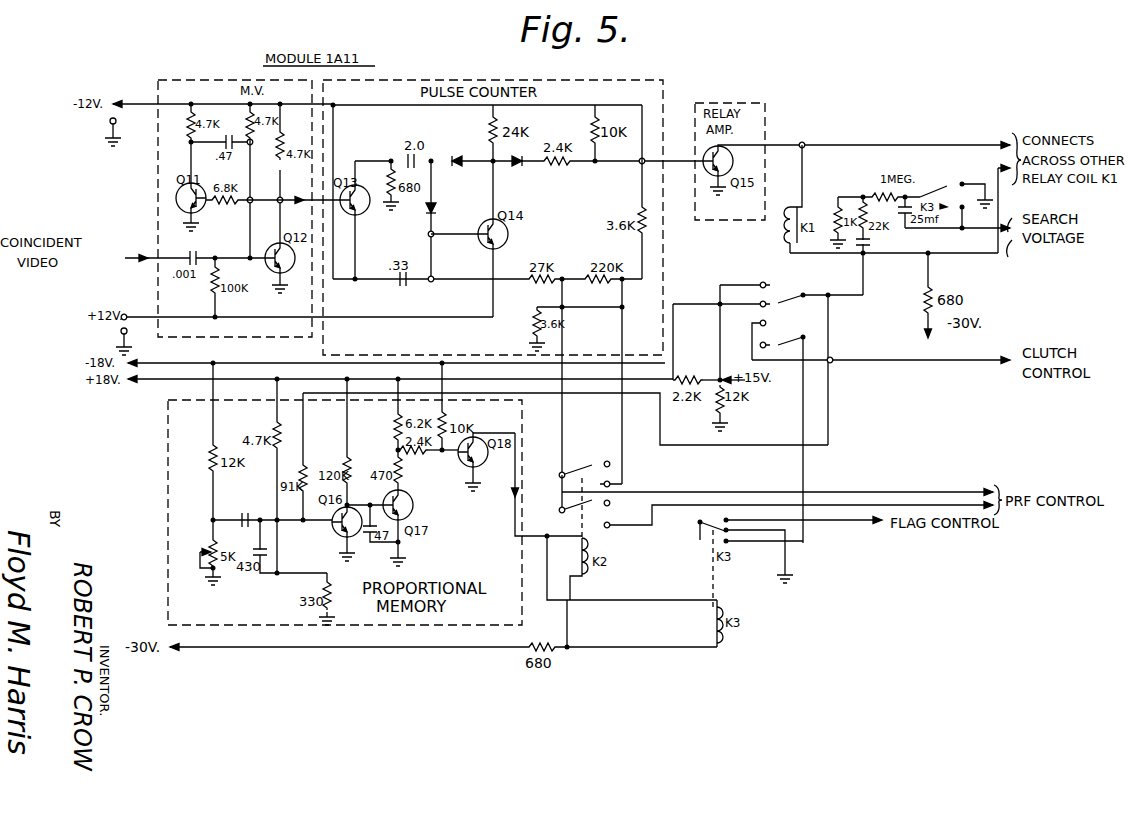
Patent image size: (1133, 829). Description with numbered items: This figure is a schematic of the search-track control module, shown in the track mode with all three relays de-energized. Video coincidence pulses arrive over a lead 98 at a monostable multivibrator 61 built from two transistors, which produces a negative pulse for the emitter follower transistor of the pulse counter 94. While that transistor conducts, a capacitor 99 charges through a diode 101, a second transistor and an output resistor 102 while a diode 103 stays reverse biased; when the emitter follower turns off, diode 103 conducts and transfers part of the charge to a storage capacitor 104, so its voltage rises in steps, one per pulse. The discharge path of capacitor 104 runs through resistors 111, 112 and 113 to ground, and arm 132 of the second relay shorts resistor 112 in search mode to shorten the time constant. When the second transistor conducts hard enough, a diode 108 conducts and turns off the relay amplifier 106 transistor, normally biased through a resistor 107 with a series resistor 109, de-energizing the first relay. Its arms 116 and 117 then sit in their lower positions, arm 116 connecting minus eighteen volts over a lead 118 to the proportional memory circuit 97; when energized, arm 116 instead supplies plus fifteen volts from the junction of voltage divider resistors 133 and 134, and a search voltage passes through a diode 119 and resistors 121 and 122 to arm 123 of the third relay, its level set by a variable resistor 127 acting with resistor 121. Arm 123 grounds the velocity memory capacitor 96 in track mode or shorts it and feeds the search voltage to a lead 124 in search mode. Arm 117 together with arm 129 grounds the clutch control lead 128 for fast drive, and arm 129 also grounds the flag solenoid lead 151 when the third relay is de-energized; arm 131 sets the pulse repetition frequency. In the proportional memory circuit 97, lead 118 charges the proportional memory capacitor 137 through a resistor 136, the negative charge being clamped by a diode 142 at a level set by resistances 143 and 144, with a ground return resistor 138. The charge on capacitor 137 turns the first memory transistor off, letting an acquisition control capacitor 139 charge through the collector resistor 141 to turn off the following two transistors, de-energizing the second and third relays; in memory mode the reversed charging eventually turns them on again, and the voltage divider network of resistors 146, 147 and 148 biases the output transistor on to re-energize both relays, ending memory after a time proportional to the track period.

The multivibrator 61 is at (203, 80).
The pulse counter 94 is at (460, 80).
The velocity memory capacitor 96 is at (873, 218).
The proportional memory circuit 97 is at (168, 432).
The lead 98 is at (150, 256).
The capacitor 99 is at (407, 158).
The diode 101 is at (457, 157).
The output resistor 102 is at (388, 182).
The diode 103 is at (435, 207).
The storage capacitor 104 is at (406, 283).
The relay amplifier 106 is at (748, 103).
The resistor 107 is at (591, 134).
The diode 108 is at (517, 166).
The resistor 109 is at (552, 167).
The resistor 111 is at (536, 283).
The resistor 112 is at (606, 283).
The resistor 113 is at (532, 335).
The relay arm 116 is at (798, 294).
The relay arm 117 is at (798, 336).
The lead 118 is at (830, 336).
The diode 119 is at (870, 242).
The resistor 121 is at (860, 197).
The resistor 122 is at (880, 194).
The relay arm 123 is at (936, 190).
The lead 124 is at (1000, 233).
The variable resistor 127 is at (836, 220).
The clutch control lead 128 is at (945, 362).
The relay arm 129 is at (700, 526).
The relay arm 131 is at (560, 511).
The relay arm 132 is at (566, 471).
The voltage divider resistor 133 is at (696, 369).
The voltage divider resistor 134 is at (714, 406).
The resistor 136 is at (318, 462).
The proportional memory capacitor 137 is at (262, 550).
The resistor 138 is at (330, 594).
The acquisition control capacitor 139 is at (371, 541).
The collector resistor 141 is at (350, 462).
The diode 142 is at (244, 516).
The resistance 143 is at (210, 456).
The resistance 144 is at (207, 548).
The voltage divider resistor 146 is at (395, 425).
The voltage divider resistor 147 is at (447, 427).
The voltage divider resistor 148 is at (414, 455).
The lead 151 is at (860, 523).